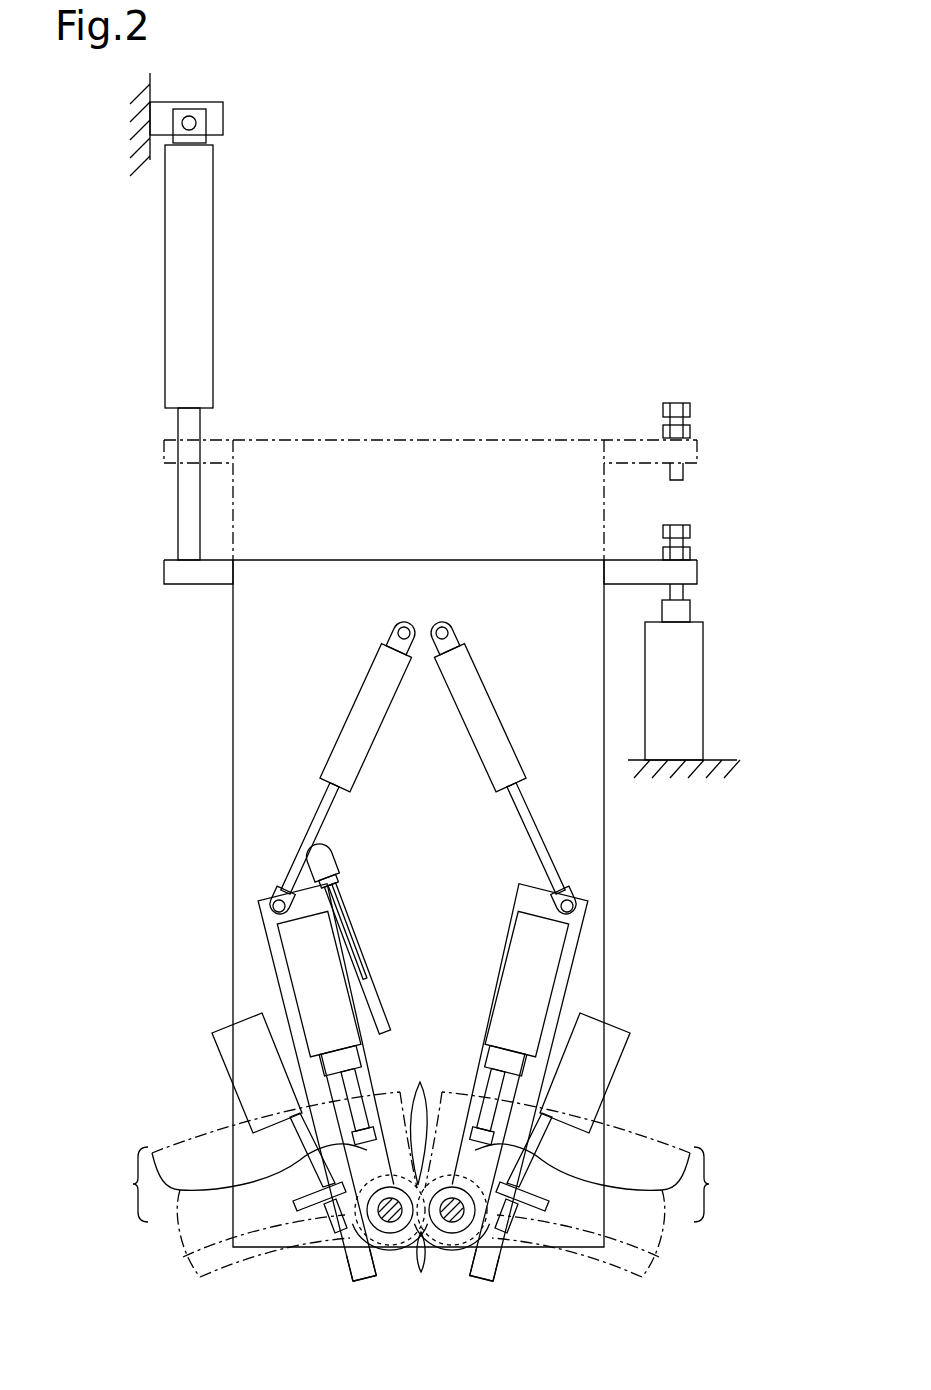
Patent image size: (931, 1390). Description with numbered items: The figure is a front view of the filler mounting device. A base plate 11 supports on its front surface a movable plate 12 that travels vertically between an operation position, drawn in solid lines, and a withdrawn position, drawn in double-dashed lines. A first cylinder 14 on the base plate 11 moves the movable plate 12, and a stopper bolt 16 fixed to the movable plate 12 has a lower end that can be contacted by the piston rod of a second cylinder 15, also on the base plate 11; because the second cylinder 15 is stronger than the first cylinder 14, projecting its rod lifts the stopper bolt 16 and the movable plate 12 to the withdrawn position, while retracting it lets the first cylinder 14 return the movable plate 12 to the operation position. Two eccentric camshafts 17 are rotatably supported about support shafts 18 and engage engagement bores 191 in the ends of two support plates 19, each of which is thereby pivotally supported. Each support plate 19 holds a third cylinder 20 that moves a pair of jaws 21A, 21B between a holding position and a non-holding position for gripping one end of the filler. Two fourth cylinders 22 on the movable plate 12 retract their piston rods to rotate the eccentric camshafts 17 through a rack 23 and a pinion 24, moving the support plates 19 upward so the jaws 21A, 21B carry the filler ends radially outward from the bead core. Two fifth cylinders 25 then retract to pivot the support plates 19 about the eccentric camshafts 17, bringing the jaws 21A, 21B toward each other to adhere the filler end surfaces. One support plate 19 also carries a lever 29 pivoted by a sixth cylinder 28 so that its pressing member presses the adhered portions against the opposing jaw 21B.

The base plate 11 is at (152, 150).
The movable plate 12 is at (422, 437).
The first cylinder 14 is at (171, 298).
The second cylinder 15 is at (690, 638).
The stopper bolt 16 is at (690, 409).
The eccentric camshaft 17 is at (432, 1142).
The support shaft 18 is at (422, 1250).
The support plate 19 is at (258, 908).
The third cylinder 20 is at (275, 953).
The jaw 21A is at (417, 1183).
The jaw 21B is at (417, 1184).
The fourth cylinder 22 is at (232, 1060).
The rack 23 is at (370, 1283).
The pinion 24 is at (393, 1262).
The fifth cylinder 25 is at (364, 689).
The sixth cylinder 28 is at (347, 862).
The lever 29 is at (368, 954).
The engagement bore 191 is at (338, 1246).